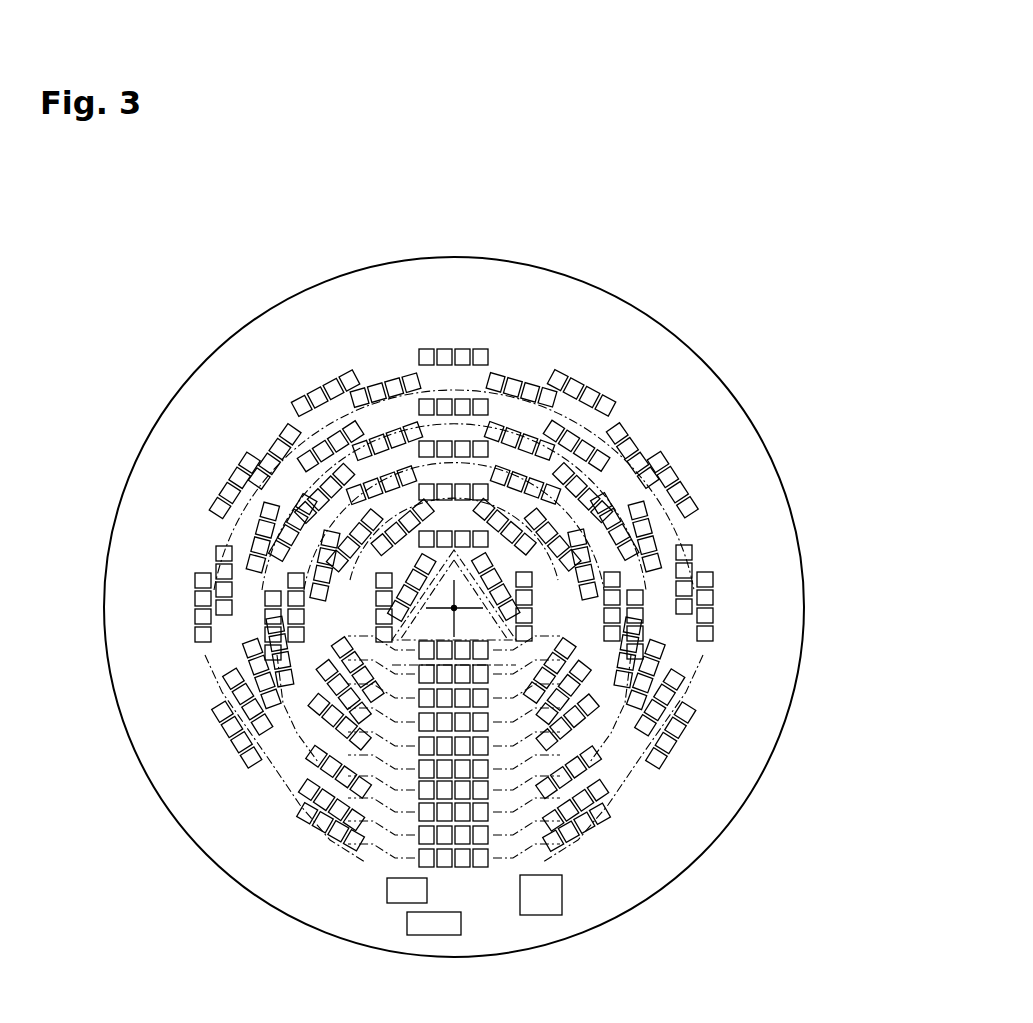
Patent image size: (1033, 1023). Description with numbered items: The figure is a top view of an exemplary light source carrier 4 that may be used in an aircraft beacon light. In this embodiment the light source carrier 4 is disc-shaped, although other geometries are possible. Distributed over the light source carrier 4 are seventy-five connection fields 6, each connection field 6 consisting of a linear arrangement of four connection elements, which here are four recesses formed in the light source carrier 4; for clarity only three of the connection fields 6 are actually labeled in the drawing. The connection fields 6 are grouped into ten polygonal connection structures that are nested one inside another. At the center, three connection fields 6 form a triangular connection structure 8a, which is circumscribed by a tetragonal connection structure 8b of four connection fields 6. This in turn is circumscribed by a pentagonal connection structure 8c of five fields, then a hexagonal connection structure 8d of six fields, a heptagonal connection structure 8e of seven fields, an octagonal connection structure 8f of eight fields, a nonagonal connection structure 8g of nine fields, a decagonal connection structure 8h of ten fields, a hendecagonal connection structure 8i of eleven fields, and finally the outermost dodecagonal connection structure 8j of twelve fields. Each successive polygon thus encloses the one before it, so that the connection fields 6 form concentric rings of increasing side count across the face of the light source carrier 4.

The light source carrier 4 is at (732, 430).
The connection field 6 is at (706, 468).
The triangular connection structure 8a is at (217, 523).
The tetragonal connection structure 8b is at (200, 662).
The pentagonal connection structure 8c is at (192, 622).
The hexagonal connection structure 8d is at (312, 372).
The heptagonal connection structure 8e is at (277, 430).
The octagonal connection structure 8f is at (520, 366).
The nonagonal connection structure 8g is at (690, 548).
The decagonal connection structure 8h is at (393, 356).
The hendecagonal connection structure 8i is at (615, 410).
The dodecagonal connection structure 8j is at (377, 362).